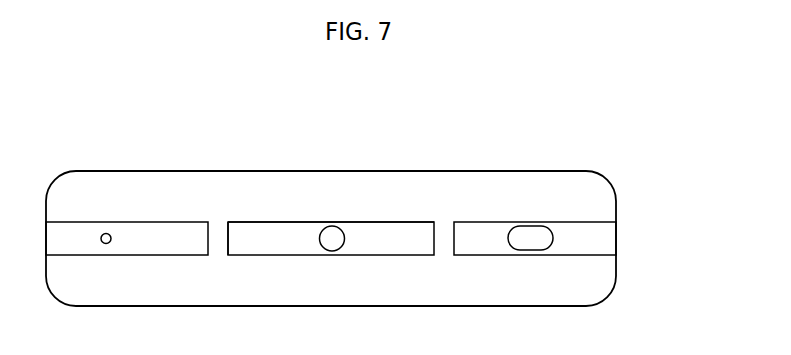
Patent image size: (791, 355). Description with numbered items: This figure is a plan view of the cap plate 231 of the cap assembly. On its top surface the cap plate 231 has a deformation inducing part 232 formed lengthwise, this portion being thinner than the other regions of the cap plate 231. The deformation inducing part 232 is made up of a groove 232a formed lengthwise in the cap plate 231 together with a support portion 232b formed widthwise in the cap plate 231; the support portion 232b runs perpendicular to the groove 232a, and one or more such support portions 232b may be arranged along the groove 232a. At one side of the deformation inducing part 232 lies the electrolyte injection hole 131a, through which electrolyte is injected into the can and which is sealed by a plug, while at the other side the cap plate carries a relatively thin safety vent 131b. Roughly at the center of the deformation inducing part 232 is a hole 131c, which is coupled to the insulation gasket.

The cap plate 231 is at (624, 151).
The electrolyte injection hole 131a is at (106, 233).
The safety vent 131b is at (532, 236).
The hole 131c is at (332, 237).
The deformation inducing part 232 is at (294, 115).
The groove 232a is at (279, 222).
The support portion 232b is at (229, 239).